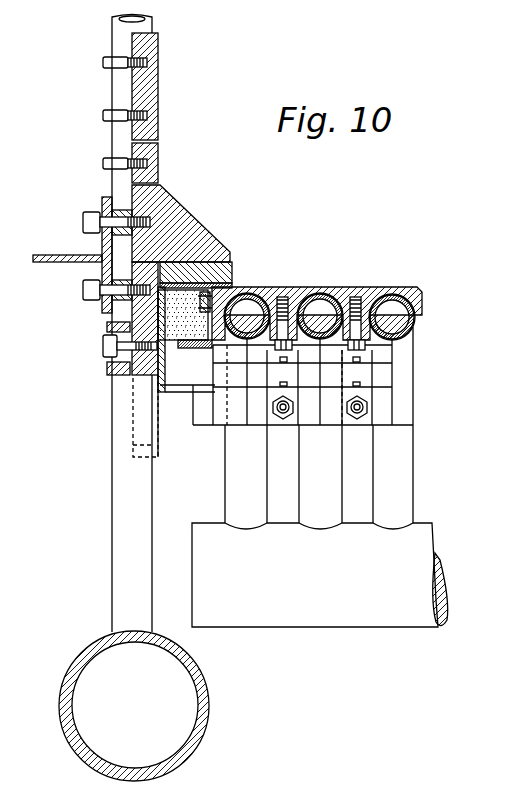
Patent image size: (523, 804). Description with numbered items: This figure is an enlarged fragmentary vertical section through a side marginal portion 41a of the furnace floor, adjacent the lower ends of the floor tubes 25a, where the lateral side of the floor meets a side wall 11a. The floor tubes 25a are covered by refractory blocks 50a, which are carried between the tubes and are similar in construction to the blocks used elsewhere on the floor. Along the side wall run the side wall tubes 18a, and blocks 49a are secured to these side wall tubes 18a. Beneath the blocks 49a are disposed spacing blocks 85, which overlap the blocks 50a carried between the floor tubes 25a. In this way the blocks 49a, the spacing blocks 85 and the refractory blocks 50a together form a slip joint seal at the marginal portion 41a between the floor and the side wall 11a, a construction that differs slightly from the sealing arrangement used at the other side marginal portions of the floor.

The side wall tubes 18a is at (112, 33).
The side walls 11a is at (158, 40).
The blocks 49a is at (188, 203).
The side marginal portions 41a is at (235, 242).
The spacing blocks 85 is at (235, 270).
The floor tubes 25a is at (272, 287).
The refractory blocks 50a is at (353, 287).